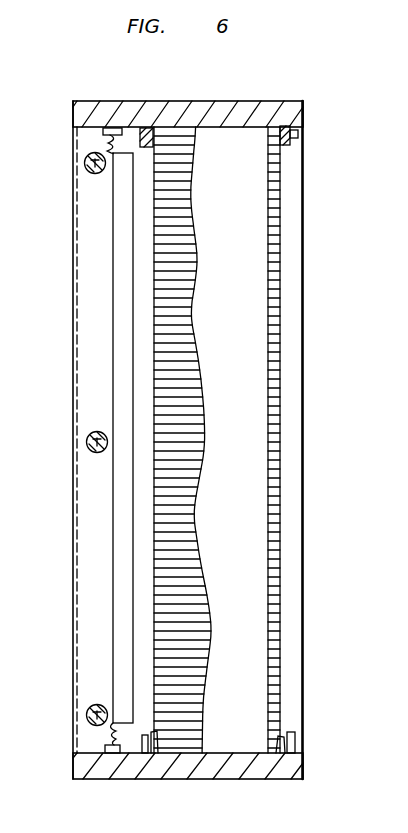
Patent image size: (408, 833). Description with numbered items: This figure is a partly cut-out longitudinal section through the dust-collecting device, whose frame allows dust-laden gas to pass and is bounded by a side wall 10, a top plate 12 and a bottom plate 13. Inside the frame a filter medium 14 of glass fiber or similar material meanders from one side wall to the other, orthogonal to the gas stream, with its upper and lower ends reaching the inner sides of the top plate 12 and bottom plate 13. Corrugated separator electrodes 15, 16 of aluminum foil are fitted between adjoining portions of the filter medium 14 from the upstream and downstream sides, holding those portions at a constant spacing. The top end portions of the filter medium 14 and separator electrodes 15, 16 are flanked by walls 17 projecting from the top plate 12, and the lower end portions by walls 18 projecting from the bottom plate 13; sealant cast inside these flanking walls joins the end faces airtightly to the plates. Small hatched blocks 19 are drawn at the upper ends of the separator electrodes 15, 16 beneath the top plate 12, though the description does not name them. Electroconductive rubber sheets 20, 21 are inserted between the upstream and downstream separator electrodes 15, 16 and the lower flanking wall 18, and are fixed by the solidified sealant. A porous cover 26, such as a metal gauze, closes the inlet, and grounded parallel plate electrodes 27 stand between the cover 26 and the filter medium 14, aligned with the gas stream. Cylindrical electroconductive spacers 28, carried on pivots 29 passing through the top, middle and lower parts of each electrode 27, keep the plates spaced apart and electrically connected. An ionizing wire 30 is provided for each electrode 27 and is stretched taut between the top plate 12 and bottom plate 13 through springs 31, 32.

The side wall 10 is at (308, 205).
The top plate 12 is at (214, 110).
The bottom plate 13 is at (210, 768).
The filter medium 14 is at (252, 333).
The upstream side separator electrode 15 is at (162, 498).
The downstream side separator electrode 16 is at (273, 382).
The flanking wall 17 is at (299, 135).
The flanking wall 18 is at (297, 740).
The spacer blocks 19 is at (148, 128).
The electroconductive rubber sheet 20 is at (143, 737).
The electroconductive rubber sheet 21 is at (285, 736).
The porous cover 26 is at (75, 330).
The grounded parallel plate electrode 27 is at (133, 352).
The cylindrical electroconductive spacer 28 is at (92, 175).
The pivot 29 is at (86, 160).
The ionizing wire 30 is at (113, 566).
The spring 31 is at (104, 131).
The spring 32 is at (108, 740).